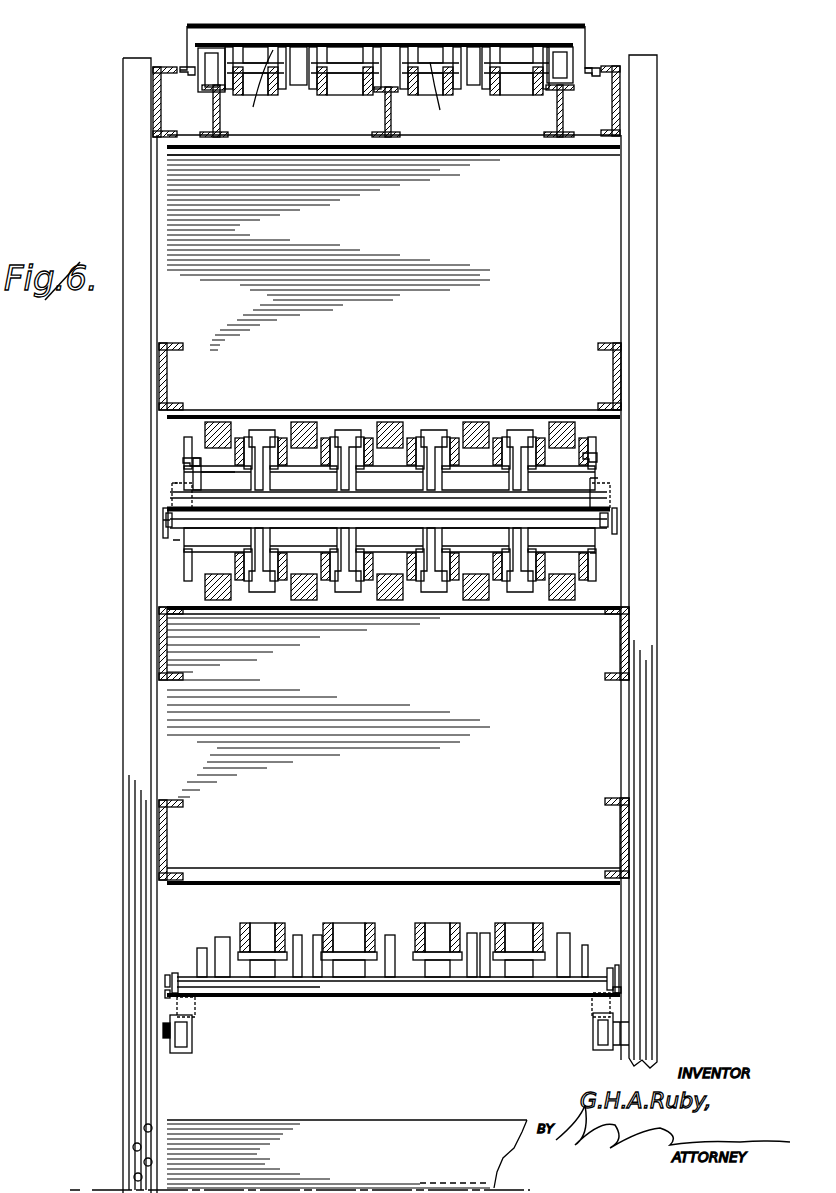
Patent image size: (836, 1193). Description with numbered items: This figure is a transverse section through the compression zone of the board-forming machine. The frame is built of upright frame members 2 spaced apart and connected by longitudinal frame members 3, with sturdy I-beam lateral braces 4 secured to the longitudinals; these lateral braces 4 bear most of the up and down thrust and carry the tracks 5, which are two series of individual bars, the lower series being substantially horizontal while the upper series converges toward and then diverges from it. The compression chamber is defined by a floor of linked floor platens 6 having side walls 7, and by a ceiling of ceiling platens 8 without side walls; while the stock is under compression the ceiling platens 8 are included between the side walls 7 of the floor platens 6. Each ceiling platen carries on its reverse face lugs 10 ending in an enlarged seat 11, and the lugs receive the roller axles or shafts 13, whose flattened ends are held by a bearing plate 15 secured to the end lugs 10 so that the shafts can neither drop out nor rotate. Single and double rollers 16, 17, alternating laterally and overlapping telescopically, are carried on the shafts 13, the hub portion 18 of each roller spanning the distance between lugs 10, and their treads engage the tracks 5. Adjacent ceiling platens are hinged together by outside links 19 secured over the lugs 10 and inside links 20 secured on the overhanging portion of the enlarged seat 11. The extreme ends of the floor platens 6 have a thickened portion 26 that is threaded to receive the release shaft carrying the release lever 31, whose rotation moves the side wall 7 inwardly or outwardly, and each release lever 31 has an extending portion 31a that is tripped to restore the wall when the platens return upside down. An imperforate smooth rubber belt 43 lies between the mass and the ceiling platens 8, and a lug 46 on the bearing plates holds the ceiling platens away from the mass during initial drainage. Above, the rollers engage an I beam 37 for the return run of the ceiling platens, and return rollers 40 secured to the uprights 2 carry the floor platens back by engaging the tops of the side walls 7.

The upright frame members 2 is at (657, 267).
The longitudinal frame members 3 is at (153, 103).
The lateral braces 4 is at (345, 662).
The tracks 5 is at (222, 420).
The floor platens 6 is at (612, 520).
The side walls 7 is at (174, 495).
The ceiling platens 8 is at (582, 31).
The lugs 10 is at (364, 1002).
The enlarged seat 11 is at (290, 78).
The roller axles or shafts 13 is at (252, 1002).
The bearing plate 15 is at (195, 92).
The single rollers 16 is at (320, 95).
The double rollers 17 is at (376, 82).
The hub portion 18 is at (485, 65).
The outside links 19 is at (300, 602).
The inside links 20 is at (528, 95).
The thickened portion 26 is at (176, 540).
The release lever 31 is at (165, 535).
The extending portion 31a is at (165, 520).
The I beam 37 is at (392, 118).
The return rollers 40 is at (170, 1048).
The rubber belt 43 is at (187, 48).
The lug 46 is at (183, 68).